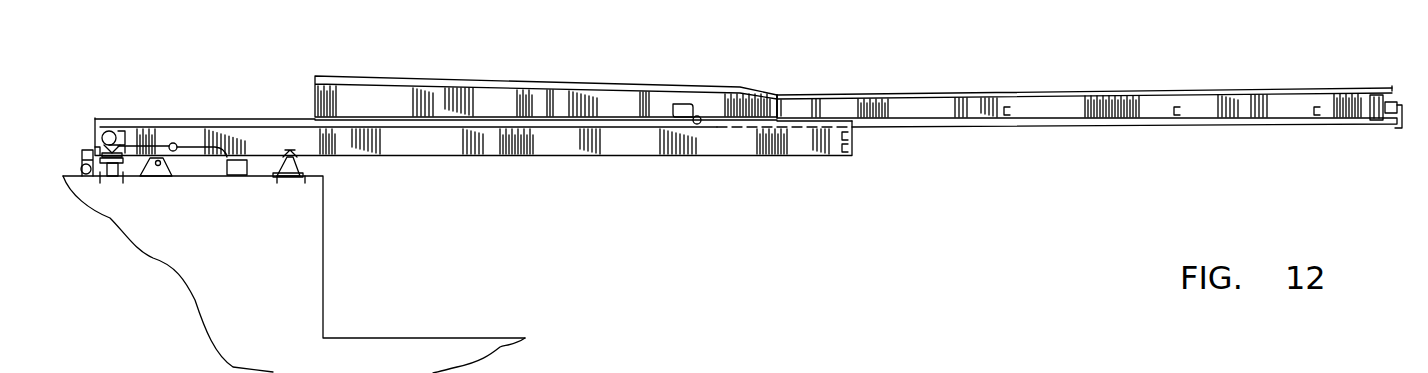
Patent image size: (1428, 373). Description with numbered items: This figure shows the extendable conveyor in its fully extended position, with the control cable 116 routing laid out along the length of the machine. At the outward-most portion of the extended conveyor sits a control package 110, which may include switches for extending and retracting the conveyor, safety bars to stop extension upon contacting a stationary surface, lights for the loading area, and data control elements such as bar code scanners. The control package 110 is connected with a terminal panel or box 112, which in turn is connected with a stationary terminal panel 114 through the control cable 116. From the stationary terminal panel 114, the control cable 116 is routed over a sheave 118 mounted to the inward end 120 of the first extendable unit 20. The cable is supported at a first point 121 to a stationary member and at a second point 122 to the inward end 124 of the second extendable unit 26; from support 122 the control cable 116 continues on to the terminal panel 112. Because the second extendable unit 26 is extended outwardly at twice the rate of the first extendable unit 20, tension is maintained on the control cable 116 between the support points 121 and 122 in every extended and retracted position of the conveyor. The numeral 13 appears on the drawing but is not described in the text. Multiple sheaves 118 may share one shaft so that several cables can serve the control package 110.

The telescoping boom section (13, 13', 13'') 13 is at (488, 70).
The first extendable unit 20 is at (473, 109).
The second extendable unit 26 is at (1077, 93).
The control package 110 is at (1395, 100).
The terminal panel or box 112 is at (1372, 100).
The stationary terminal panel 114 is at (237, 175).
The control cable 116 is at (1087, 67).
The sheave 118 is at (107, 134).
The inward end of first extendable unit 120 is at (193, 118).
The support point 121 is at (178, 150).
The support point 122 is at (695, 116).
The inward end of second extendable unit 124 is at (783, 108).